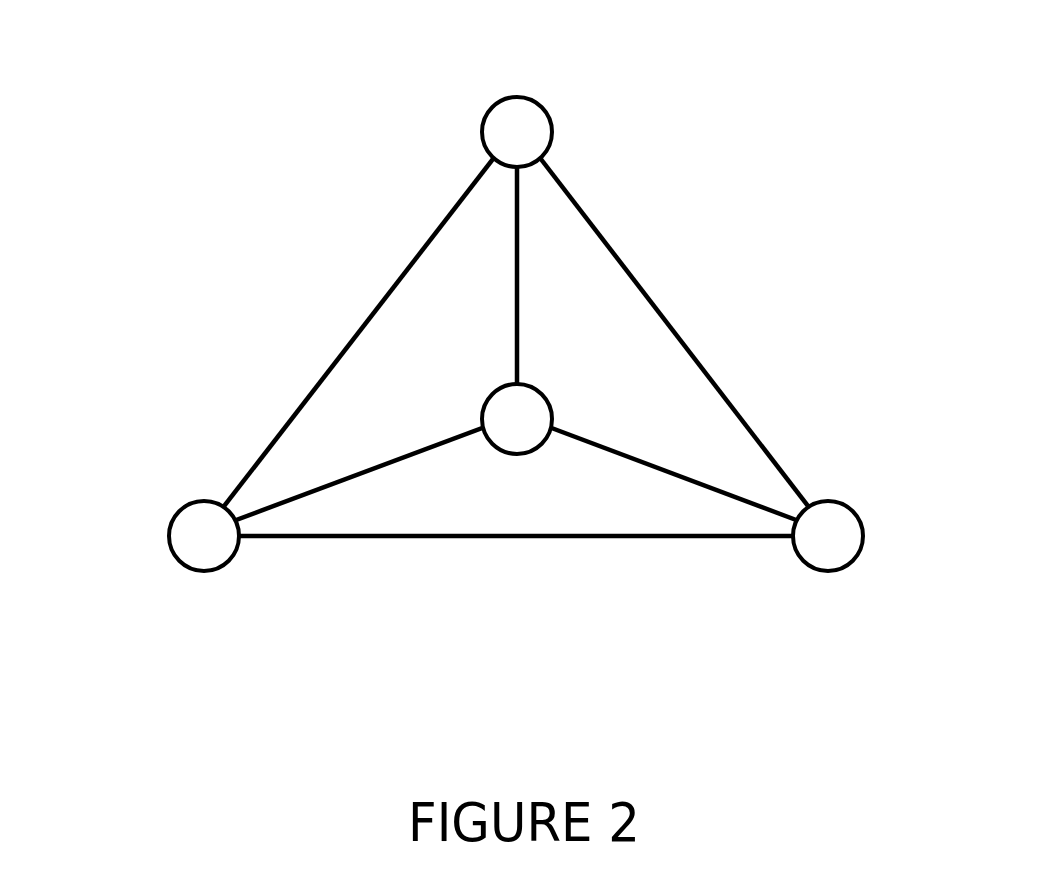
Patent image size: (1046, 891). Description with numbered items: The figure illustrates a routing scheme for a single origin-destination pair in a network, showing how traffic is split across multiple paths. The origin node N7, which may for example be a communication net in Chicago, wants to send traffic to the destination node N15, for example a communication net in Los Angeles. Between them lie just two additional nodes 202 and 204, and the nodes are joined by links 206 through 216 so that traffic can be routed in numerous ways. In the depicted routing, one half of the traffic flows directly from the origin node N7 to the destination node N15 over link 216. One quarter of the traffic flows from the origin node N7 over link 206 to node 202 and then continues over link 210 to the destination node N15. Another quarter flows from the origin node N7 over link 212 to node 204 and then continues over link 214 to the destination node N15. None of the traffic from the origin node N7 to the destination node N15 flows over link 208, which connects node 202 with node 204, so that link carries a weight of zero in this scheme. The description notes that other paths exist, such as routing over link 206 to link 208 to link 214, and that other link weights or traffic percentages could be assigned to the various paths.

The node 202 is at (548, 110).
The node 204 is at (548, 393).
The link 206 is at (430, 227).
The link 208 is at (515, 207).
The link 210 is at (615, 240).
The link 212 is at (445, 433).
The link 214 is at (678, 465).
The link 216 is at (617, 537).
The origin node N7 is at (183, 502).
The destination node N15 is at (857, 507).